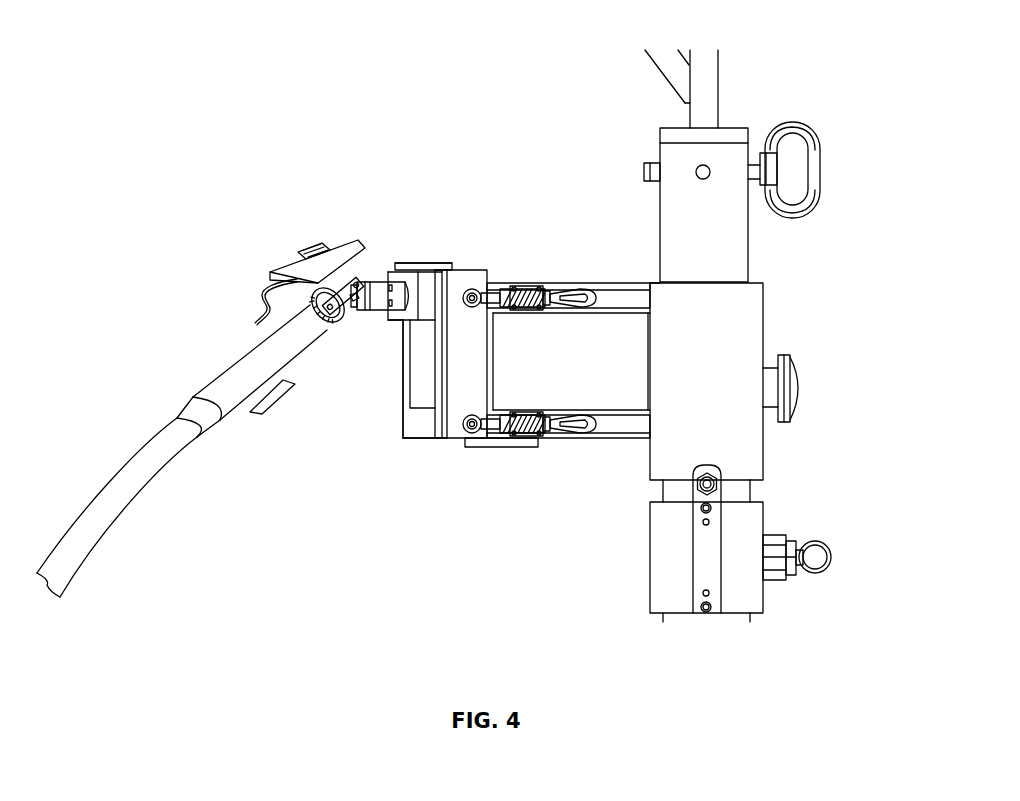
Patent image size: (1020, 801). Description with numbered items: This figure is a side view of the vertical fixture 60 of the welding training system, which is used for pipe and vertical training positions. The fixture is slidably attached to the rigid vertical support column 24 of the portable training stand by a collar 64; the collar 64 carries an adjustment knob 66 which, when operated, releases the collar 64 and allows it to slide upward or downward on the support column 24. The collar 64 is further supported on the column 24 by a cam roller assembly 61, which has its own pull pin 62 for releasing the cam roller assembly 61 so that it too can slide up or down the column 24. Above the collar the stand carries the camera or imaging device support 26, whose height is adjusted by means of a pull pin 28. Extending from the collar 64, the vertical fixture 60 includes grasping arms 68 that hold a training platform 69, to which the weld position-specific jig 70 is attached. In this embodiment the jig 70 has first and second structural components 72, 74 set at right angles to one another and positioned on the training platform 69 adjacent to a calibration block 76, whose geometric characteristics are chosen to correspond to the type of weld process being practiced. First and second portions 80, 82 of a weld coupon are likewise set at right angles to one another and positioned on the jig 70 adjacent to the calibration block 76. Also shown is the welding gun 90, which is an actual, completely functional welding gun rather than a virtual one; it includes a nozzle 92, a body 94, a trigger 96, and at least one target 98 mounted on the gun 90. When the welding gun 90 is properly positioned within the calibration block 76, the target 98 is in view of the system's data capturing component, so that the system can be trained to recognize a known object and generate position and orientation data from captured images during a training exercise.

The vertical support column 24 is at (748, 254).
The imaging device support 26 is at (713, 98).
The pull pin 28 is at (819, 160).
The vertical fixture 60 is at (539, 139).
The cam roller assembly 61 is at (653, 577).
The pull pin 62 is at (832, 557).
The collar 64 is at (763, 326).
The adjustment knob 66 is at (792, 418).
The grasping arms 68 is at (580, 284).
The training platform 69 is at (435, 263).
The weld position-specific jig 70 is at (422, 477).
The first structural component 72 is at (402, 423).
The second structural component 74 is at (438, 428).
The calibration block 76 is at (412, 275).
The first portion of weld coupon 80 is at (402, 380).
The second portion of weld coupon 82 is at (438, 408).
The welding gun 90 is at (209, 284).
The nozzle 92 is at (382, 283).
The body 94 is at (230, 418).
The trigger 96 is at (293, 388).
The target 98 is at (313, 240).